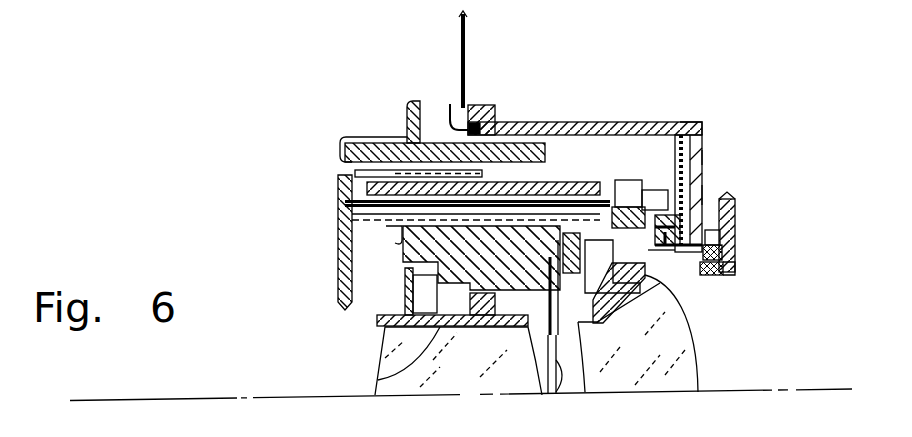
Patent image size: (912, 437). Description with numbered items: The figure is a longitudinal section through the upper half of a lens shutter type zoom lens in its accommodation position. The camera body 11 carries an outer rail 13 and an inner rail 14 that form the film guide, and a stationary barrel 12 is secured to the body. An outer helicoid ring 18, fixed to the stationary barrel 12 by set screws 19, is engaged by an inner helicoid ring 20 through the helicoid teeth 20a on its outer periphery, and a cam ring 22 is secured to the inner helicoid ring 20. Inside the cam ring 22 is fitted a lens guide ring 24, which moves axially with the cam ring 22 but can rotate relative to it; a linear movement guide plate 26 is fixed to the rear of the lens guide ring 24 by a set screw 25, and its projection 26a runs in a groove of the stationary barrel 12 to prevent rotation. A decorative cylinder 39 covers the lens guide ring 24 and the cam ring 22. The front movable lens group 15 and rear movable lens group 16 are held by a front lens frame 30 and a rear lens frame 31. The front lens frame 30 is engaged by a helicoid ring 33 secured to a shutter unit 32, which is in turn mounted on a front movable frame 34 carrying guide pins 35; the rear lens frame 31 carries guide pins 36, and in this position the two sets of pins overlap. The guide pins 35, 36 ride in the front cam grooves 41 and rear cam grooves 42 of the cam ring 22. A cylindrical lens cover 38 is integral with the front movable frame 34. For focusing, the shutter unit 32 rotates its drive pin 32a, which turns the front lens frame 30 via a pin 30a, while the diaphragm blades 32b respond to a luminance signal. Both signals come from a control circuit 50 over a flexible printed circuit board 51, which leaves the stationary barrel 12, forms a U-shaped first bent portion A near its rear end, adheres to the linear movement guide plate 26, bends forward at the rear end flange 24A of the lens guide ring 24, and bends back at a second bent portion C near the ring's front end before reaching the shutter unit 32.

The control circuit 50 is at (467, 23).
The set screws 19 is at (449, 108).
The stationary barrel 12 is at (476, 112).
The outer helicoid ring 18 is at (408, 108).
The inner helicoid ring 20 is at (556, 130).
The helicoid teeth 20a is at (522, 122).
The decorative cylinder 39 is at (355, 174).
The cam ring 22 is at (592, 182).
The lens guide ring 24 is at (613, 200).
The cylindrical lens cover 38 is at (339, 240).
The second bent portion C is at (384, 242).
The shutter unit 32 is at (340, 258).
The drive pin 32a is at (404, 284).
The pin 30a is at (413, 300).
The front lens frame 30 is at (385, 322).
The front movable frame 34 is at (598, 292).
The diaphragm blades 32b is at (562, 393).
The front movable lens group 15 is at (447, 382).
The helicoid ring 33 is at (378, 380).
The flexible printed circuit board 51 is at (707, 194).
The rear movable lens group 16 is at (673, 380).
The front cam grooves 41 is at (662, 200).
The rear cam grooves 42 is at (685, 130).
The guide pins 35 is at (659, 205).
The guide pins 36 is at (675, 130).
The linear movement guide plate 26 is at (703, 185).
The projection 26a is at (704, 127).
The first bent portion A is at (706, 157).
The set screw 25 is at (736, 210).
The outer rail 13 is at (737, 243).
The inner rail 14 is at (735, 264).
The camera body 11 is at (728, 272).
The rear lens frame 31 is at (675, 245).
The rear end flange 24A is at (690, 250).